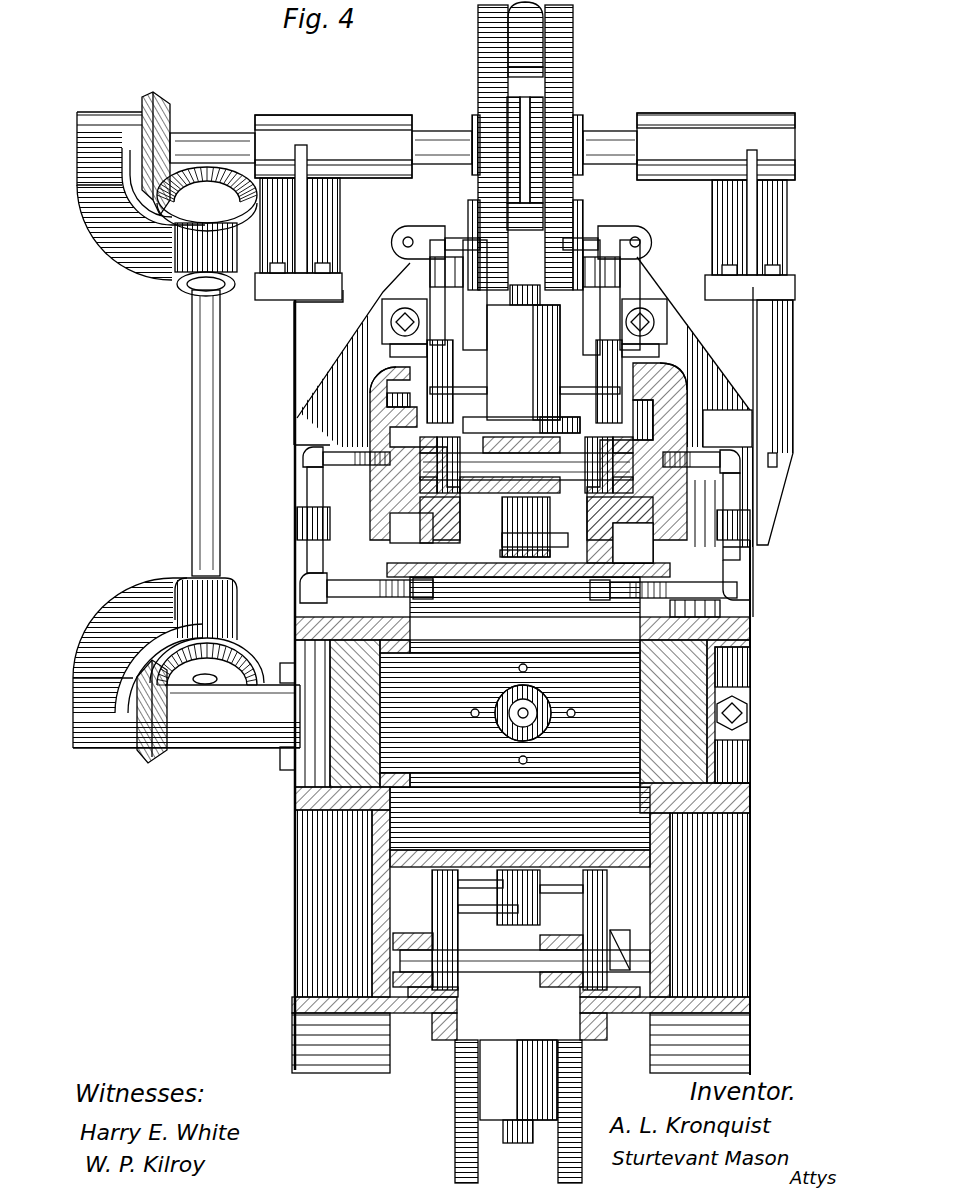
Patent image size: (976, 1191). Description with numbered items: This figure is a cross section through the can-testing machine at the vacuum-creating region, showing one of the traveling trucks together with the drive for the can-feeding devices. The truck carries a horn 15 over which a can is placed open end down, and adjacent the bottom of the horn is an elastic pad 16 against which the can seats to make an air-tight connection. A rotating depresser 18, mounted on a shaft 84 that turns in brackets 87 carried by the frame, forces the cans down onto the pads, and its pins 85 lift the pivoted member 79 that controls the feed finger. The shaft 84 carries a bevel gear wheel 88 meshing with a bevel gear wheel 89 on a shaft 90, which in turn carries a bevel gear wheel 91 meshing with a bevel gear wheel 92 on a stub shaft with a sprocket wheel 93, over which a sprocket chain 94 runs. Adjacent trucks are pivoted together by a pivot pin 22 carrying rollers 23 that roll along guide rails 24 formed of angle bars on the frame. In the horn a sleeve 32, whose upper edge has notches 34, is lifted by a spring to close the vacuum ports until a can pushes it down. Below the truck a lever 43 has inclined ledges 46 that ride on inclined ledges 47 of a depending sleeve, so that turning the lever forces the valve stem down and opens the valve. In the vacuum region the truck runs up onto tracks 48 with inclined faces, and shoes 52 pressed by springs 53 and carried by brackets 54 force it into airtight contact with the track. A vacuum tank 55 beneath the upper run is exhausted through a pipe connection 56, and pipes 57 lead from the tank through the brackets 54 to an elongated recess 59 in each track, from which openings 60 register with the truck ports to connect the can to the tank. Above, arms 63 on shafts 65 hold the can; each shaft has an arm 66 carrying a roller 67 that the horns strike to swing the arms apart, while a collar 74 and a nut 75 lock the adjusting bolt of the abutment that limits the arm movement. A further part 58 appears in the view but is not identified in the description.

The horn 15 is at (605, 1074).
The elastic pad 16 is at (520, 414).
The rotating depresser wheel 18 is at (572, 62).
The pivot pin 22 is at (585, 500).
The rollers 23 is at (456, 500).
The guide rails or tracks 24 is at (440, 540).
The sleeve 32 is at (505, 1162).
The notches 34 is at (525, 284).
The lever 43 is at (572, 890).
The inclined ledges 46 is at (527, 548).
The inclined ledges 47 is at (510, 530).
The tracks 48 is at (306, 518).
The shoes 52 is at (302, 452).
The springs 53 is at (388, 407).
The brackets 54 is at (366, 370).
The vacuum tank 55 is at (306, 822).
The pipe connection 56 is at (538, 704).
The pipes 57 is at (320, 586).
The bolt 58 is at (686, 413).
The elongated recess 59 is at (716, 437).
The openings 60 is at (463, 390).
The arms 63 is at (455, 262).
The shaft 65 is at (428, 235).
The arm 66 is at (590, 398).
The roller 67 is at (526, 465).
The collar 74 is at (392, 313).
The nut 75 is at (388, 334).
The member 79 is at (527, 36).
The shaft 84 is at (602, 136).
The pins 85 is at (556, 82).
The brackets 87 is at (333, 234).
The bevel gear wheel 88 is at (166, 102).
The bevel gear wheel 89 is at (178, 240).
The shaft 90 is at (196, 462).
The bevel gear wheel 91 is at (242, 662).
The bevel gear wheel 92 is at (162, 760).
The sprocket wheel 93 is at (298, 772).
The sprocket chain 94 is at (293, 692).